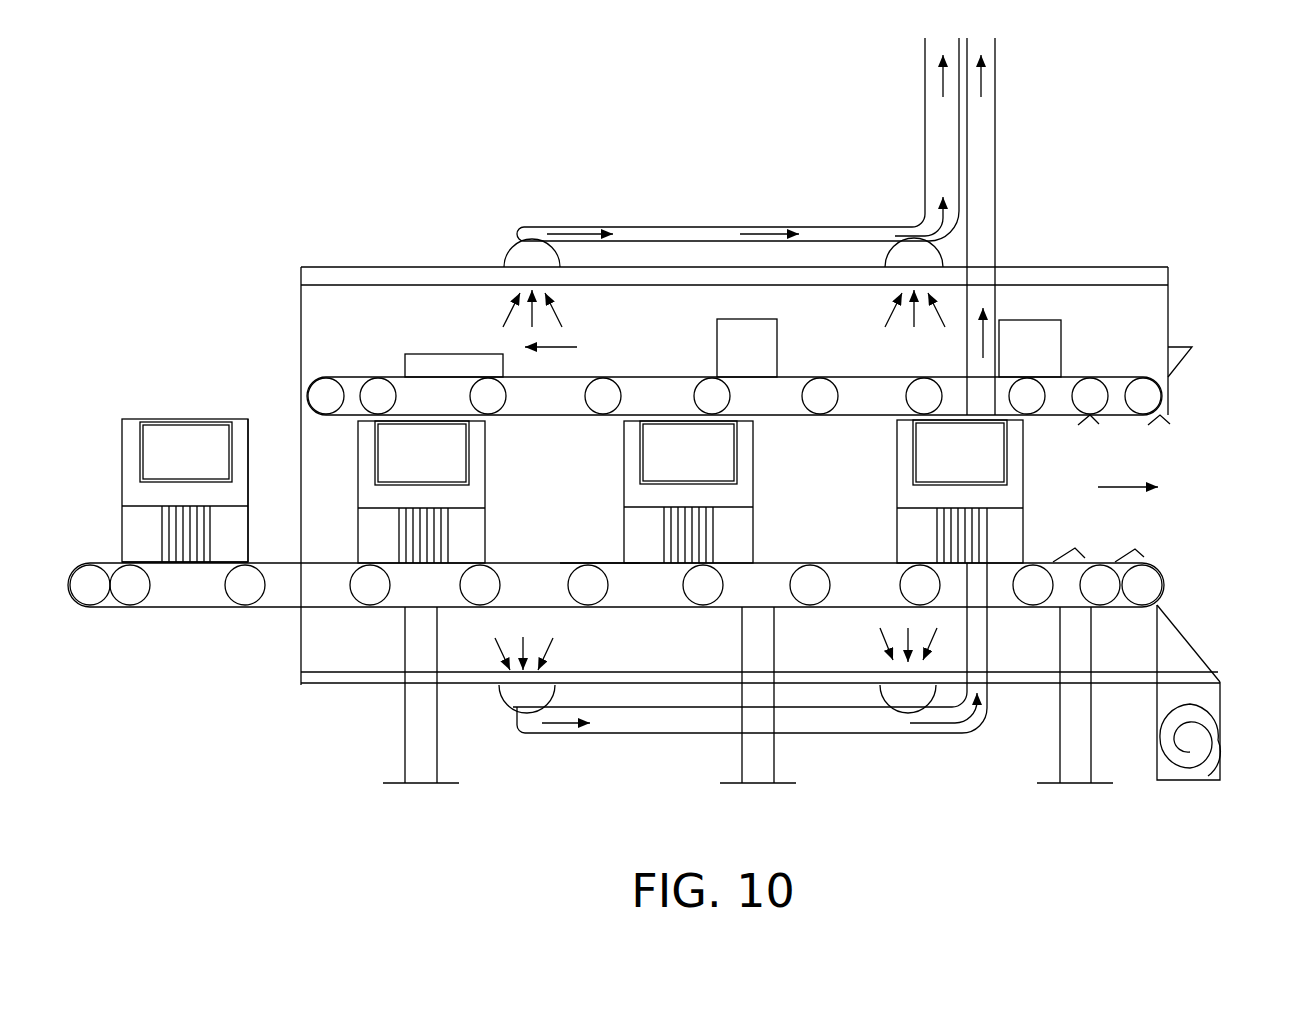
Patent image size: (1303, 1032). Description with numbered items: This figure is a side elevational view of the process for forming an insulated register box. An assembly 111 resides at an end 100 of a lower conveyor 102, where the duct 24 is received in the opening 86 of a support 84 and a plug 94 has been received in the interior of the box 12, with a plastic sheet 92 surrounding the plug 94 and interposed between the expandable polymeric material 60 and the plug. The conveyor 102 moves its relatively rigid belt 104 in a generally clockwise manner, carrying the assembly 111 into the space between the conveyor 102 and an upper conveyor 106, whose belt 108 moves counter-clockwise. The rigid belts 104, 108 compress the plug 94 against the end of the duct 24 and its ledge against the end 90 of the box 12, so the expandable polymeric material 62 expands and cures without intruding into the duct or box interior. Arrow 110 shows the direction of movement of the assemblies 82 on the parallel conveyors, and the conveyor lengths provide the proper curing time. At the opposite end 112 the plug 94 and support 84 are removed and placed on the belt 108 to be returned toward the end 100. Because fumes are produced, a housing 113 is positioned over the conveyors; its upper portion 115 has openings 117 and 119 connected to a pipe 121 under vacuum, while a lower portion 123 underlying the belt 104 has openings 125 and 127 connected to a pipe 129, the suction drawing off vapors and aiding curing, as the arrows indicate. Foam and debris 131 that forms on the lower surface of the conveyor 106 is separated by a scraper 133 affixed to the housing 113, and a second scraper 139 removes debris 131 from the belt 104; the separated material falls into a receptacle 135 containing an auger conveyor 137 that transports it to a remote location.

The box 12 is at (240, 460).
The duct 24 is at (202, 537).
The expandable polymeric material 60 is at (130, 480).
The expandable polymeric material 62 is at (475, 460).
The assemblies 82 is at (248, 498).
The support 84 is at (450, 352).
The opening 86 is at (162, 543).
The end 90 is at (120, 424).
The plastic sheet 92 is at (233, 442).
The plug 94 is at (1062, 340).
The end 100 is at (102, 608).
The lower conveyor 102 is at (318, 607).
The belt 104 is at (560, 562).
The conveyor 106 is at (657, 375).
The belt 108 is at (780, 418).
The arrow 110 is at (1108, 508).
The assembly 111 is at (172, 403).
The opposite end 112 is at (1163, 580).
The housing 113 is at (300, 318).
The upper portion 115 is at (365, 300).
The opening 117 is at (507, 252).
The opening 119 is at (885, 253).
The pipe 121 is at (680, 222).
The portion 123 is at (370, 663).
The opening 125 is at (505, 700).
The opening 127 is at (892, 693).
The pipe 129 is at (873, 735).
The foam and debris 131 is at (1090, 420).
The scraper 133 is at (1190, 357).
The receptacle 135 is at (1210, 693).
The auger conveyor 137 is at (1210, 745).
The scraper 139 is at (1190, 640).